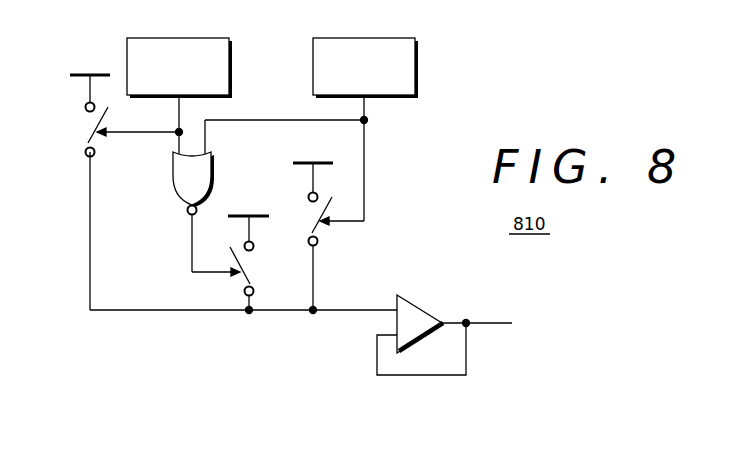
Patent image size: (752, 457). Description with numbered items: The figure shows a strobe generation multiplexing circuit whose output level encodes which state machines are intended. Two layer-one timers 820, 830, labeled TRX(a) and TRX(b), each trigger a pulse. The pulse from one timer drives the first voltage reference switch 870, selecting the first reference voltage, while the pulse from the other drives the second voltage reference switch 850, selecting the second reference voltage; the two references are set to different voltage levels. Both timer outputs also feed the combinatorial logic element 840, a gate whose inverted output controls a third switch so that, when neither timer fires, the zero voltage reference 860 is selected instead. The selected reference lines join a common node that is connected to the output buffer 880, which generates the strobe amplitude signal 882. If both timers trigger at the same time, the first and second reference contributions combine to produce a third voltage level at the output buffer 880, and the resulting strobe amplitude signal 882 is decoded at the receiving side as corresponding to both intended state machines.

The layer-1 timer 820 is at (197, 38).
The layer-1 timer 830 is at (393, 38).
The combinatorial logic element 840 is at (171, 176).
The second voltage reference switch 850 is at (311, 215).
The zero voltage reference 860 is at (248, 271).
The first voltage reference switch 870 is at (86, 131).
The output buffer 880 is at (412, 306).
The strobe amplitude signal 882 is at (490, 328).